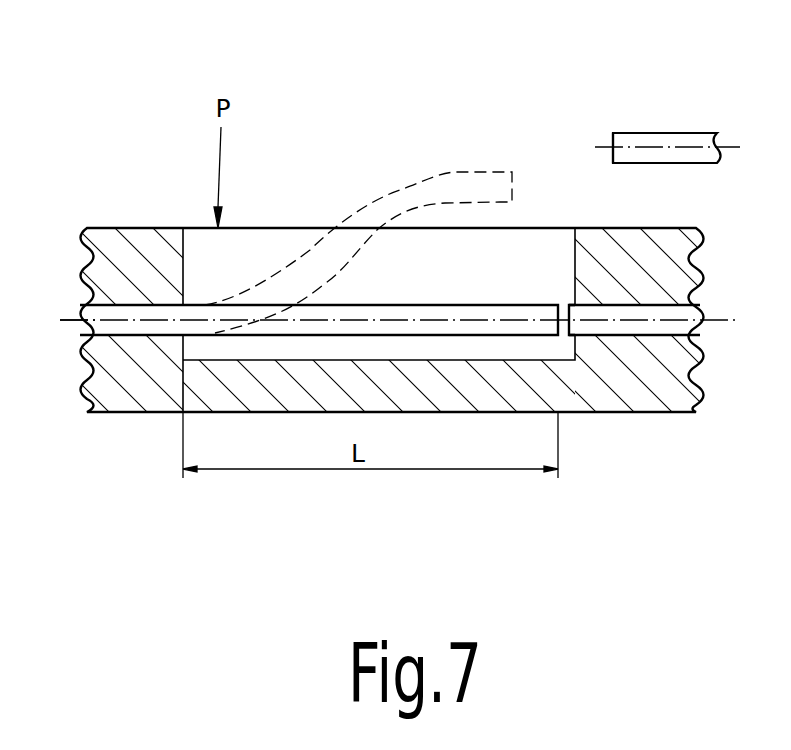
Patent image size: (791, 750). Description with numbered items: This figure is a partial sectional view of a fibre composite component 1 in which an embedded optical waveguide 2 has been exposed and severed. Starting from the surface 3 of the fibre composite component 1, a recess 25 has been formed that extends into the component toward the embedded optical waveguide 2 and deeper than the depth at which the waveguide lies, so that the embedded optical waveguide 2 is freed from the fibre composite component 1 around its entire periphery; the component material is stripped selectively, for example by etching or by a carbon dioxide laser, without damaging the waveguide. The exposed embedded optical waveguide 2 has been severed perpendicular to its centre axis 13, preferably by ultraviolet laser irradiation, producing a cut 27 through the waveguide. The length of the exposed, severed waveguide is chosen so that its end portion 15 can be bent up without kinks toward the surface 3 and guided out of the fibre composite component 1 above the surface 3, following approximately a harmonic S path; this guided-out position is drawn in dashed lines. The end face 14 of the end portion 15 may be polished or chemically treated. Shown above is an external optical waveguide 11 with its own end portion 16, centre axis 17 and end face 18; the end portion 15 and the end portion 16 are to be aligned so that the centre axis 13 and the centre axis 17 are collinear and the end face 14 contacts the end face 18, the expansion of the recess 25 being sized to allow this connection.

The fibre composite component 1 is at (150, 412).
The embedded optical waveguide 2 is at (137, 327).
The surface 3 is at (113, 228).
The external optical waveguide 11 is at (707, 130).
The centre axis 13 is at (73, 320).
The end face 14 is at (580, 313).
The end portion 15 is at (537, 312).
The end portion 16 is at (632, 140).
The centre axis 17 is at (667, 147).
The end face 18 is at (613, 138).
The recess 25 is at (183, 266).
The cut 27 is at (565, 330).